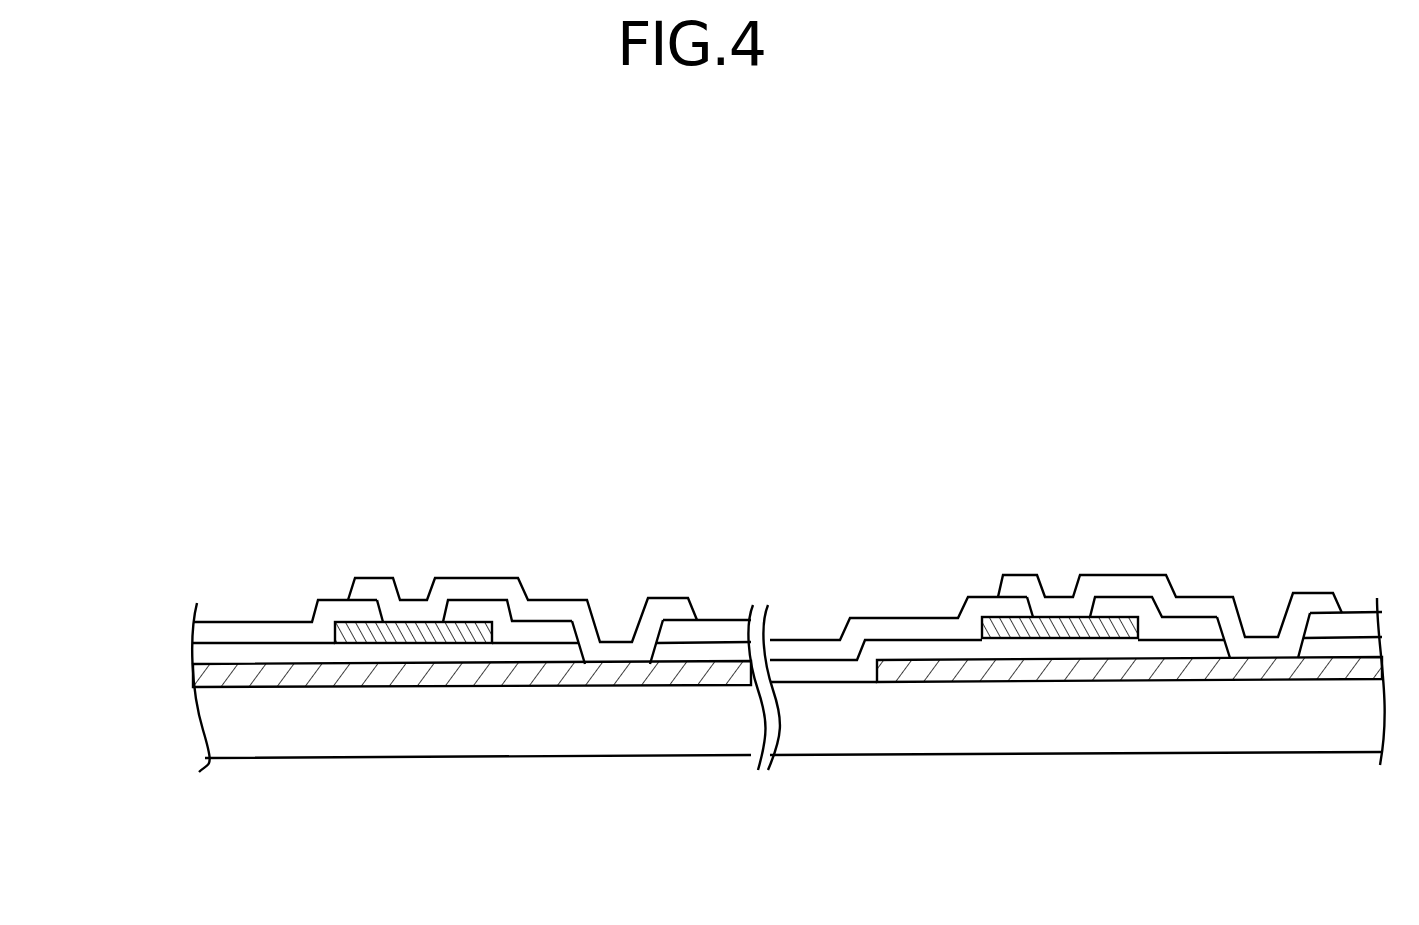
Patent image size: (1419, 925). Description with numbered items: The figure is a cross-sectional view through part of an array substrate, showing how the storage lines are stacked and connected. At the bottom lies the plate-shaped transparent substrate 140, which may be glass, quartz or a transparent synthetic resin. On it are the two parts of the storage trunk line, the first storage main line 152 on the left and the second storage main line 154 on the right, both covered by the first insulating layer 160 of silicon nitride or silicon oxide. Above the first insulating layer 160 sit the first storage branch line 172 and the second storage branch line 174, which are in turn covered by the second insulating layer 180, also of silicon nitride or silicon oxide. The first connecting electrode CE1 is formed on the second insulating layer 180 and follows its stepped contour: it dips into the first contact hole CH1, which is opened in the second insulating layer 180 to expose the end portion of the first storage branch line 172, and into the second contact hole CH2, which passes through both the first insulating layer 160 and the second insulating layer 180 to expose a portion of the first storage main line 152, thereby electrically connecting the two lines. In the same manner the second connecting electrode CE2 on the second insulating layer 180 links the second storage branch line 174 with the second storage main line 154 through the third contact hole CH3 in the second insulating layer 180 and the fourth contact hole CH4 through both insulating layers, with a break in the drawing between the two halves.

The transparent substrate 140 is at (217, 725).
The first storage main line 152 is at (547, 686).
The second storage main line 154 is at (1192, 682).
The first insulating layer 160 is at (203, 662).
The first storage branch line 172 is at (405, 643).
The second storage branch line 174 is at (1055, 638).
The second insulating layer 180 is at (202, 632).
The first contact hole CH1 is at (384, 605).
The second contact hole CH2 is at (598, 637).
The third contact hole CH3 is at (1030, 612).
The fourth contact hole CH4 is at (1246, 637).
The first connecting electrode CE1 is at (512, 588).
The second connecting electrode CE2 is at (1157, 585).